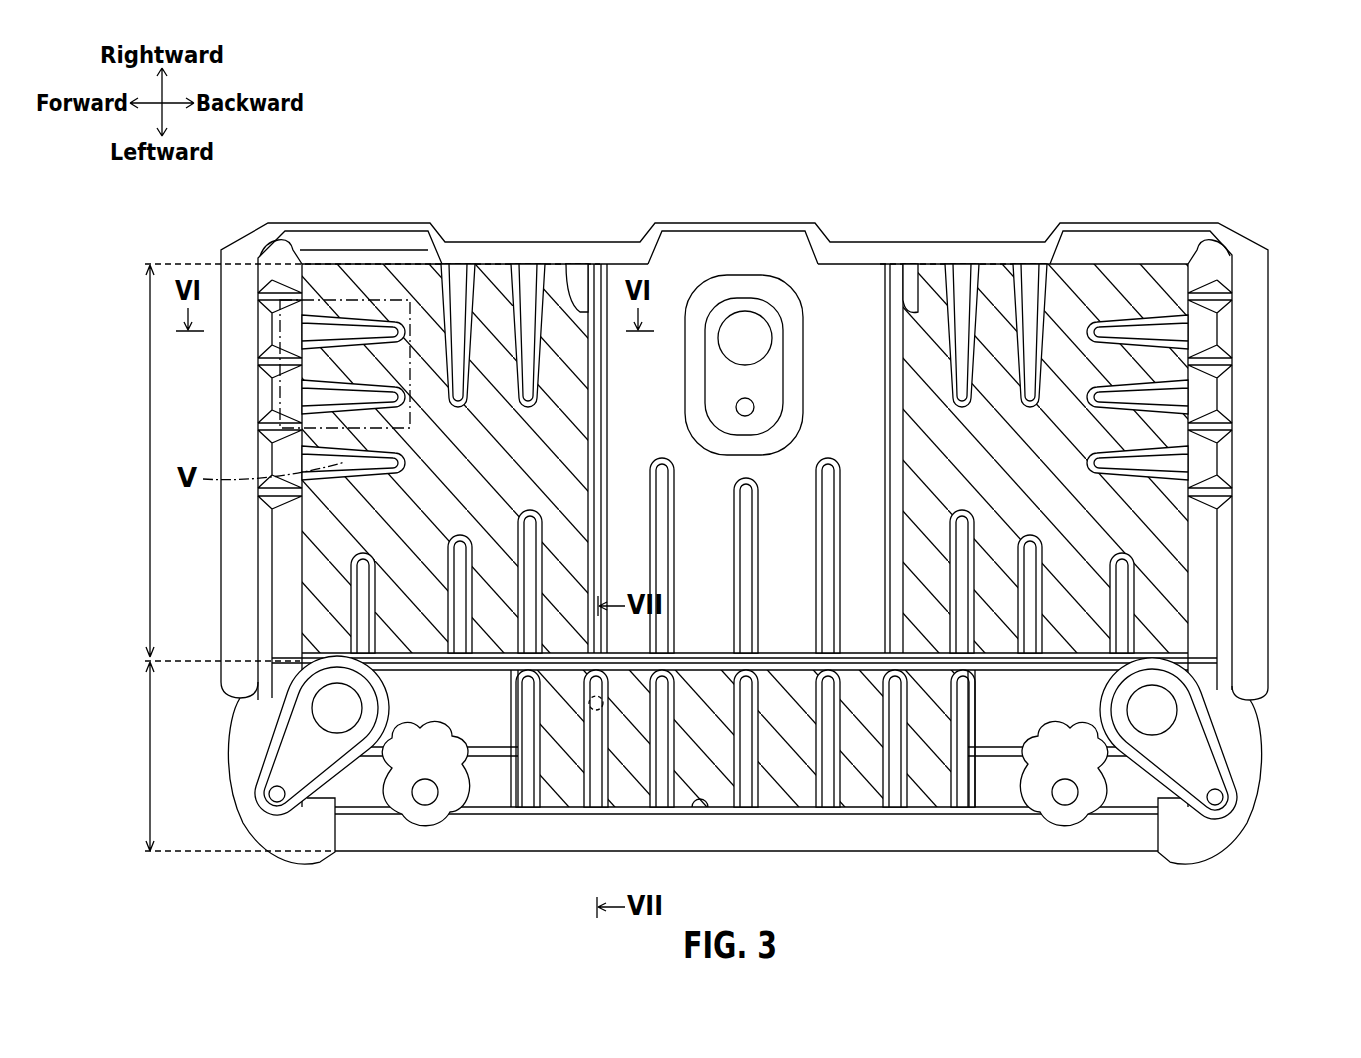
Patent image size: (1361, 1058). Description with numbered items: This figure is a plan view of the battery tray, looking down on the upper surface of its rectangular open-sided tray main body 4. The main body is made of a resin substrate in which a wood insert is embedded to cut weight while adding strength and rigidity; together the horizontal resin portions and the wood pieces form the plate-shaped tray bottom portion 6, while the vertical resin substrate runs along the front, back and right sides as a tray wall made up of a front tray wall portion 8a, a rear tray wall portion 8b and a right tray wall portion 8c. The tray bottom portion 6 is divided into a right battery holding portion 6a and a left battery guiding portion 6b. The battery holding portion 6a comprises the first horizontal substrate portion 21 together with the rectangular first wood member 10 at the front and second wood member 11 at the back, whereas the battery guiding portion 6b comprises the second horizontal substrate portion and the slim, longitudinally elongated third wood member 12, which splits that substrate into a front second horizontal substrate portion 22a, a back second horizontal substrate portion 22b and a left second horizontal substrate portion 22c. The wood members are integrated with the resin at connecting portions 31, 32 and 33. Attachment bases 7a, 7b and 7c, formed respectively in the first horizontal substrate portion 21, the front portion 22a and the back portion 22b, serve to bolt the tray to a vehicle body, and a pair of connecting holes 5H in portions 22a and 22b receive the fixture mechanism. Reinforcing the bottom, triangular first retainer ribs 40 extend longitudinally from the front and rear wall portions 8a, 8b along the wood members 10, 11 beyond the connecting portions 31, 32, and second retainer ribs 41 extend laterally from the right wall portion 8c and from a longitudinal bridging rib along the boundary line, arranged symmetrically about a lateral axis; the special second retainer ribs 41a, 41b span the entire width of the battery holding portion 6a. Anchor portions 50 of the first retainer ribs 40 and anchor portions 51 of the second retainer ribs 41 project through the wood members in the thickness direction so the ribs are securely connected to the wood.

The tray main body 4 is at (1096, 151).
The connecting holes 5H is at (425, 806).
The tray bottom portion 6 is at (1018, 866).
The battery holding portion 6a is at (582, 460).
The battery guiding portion 6b is at (224, 756).
The attachment base 7a is at (768, 373).
The attachment base 7b is at (302, 760).
The attachment base 7c is at (1190, 752).
The front tray wall portion 8a is at (243, 312).
The rear tray wall portion 8b is at (1268, 275).
The right tray wall portion 8c is at (728, 224).
The first wood member 10 is at (477, 471).
The second wood member 11 is at (982, 461).
The third wood member 12 is at (772, 739).
The first horizontal substrate portion 21 is at (632, 394).
The front second horizontal substrate portion 22a is at (412, 707).
The back second horizontal substrate portion 22b is at (995, 707).
The left second horizontal substrate portion 22c is at (862, 835).
The first connecting portion 31 is at (325, 262).
The second connecting portion 32 is at (1133, 262).
The third connecting portion 33 is at (700, 808).
The first retainer ribs 40 is at (345, 336).
The second retainer ribs 41 is at (462, 292).
The special second retainer rib 41a is at (572, 278).
The special second retainer rib 41b is at (888, 310).
The anchor portions 50 is at (385, 330).
The anchor portions 51 is at (580, 714).